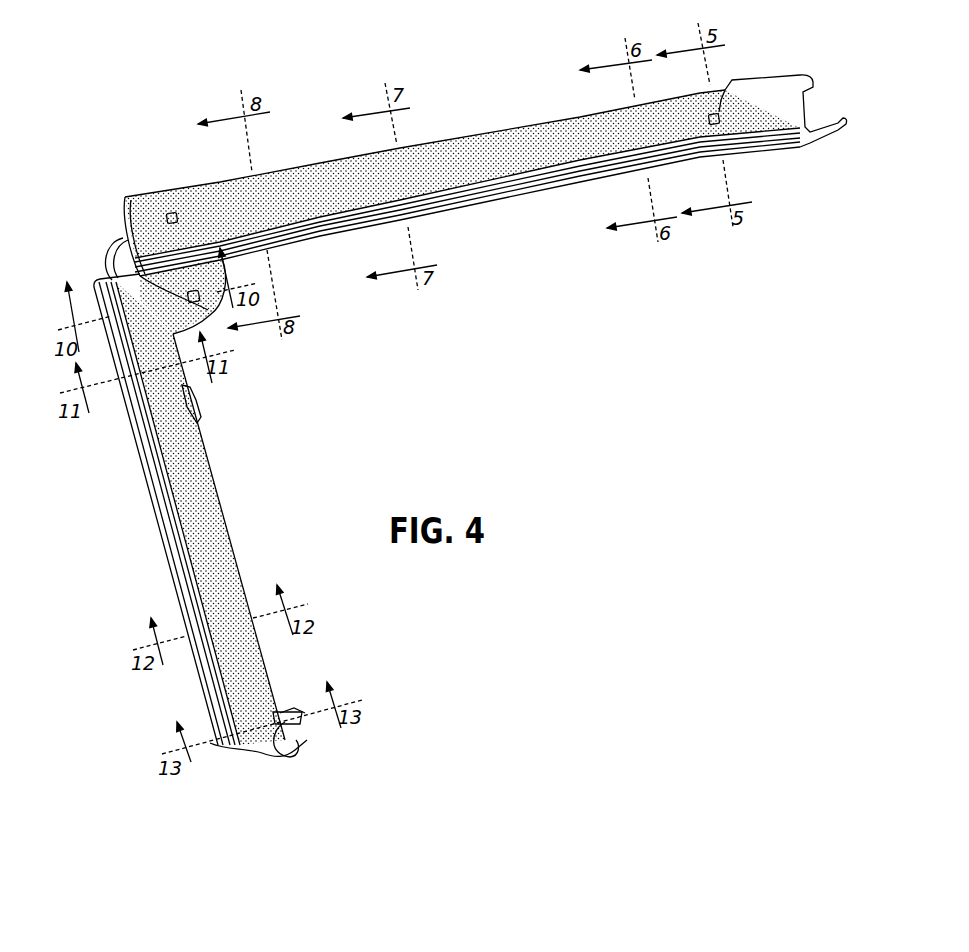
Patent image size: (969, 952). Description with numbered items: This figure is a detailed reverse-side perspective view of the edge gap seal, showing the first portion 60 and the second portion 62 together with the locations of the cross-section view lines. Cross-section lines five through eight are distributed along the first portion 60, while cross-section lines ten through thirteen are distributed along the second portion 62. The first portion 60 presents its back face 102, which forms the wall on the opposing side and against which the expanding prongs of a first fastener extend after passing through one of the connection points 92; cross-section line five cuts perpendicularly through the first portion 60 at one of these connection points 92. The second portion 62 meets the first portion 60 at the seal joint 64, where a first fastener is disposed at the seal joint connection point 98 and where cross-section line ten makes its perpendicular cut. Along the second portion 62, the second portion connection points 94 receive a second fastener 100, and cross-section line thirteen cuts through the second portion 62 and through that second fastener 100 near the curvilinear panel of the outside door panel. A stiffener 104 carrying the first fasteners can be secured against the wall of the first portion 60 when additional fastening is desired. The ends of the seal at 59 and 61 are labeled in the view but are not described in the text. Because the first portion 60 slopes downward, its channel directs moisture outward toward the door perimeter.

The end portion of first frame member 59 is at (808, 74).
The first portion 60 is at (500, 128).
The end portion of first frame member 61 is at (123, 203).
The second portion 62 is at (218, 523).
The seal joint 64 is at (213, 325).
The connection points 92 is at (170, 213).
The second portion connection points 94 is at (207, 408).
The seal joint connection point 98 is at (123, 240).
The second fastener 100 is at (287, 713).
The back face 102 is at (523, 173).
The stiffener 104 is at (158, 505).